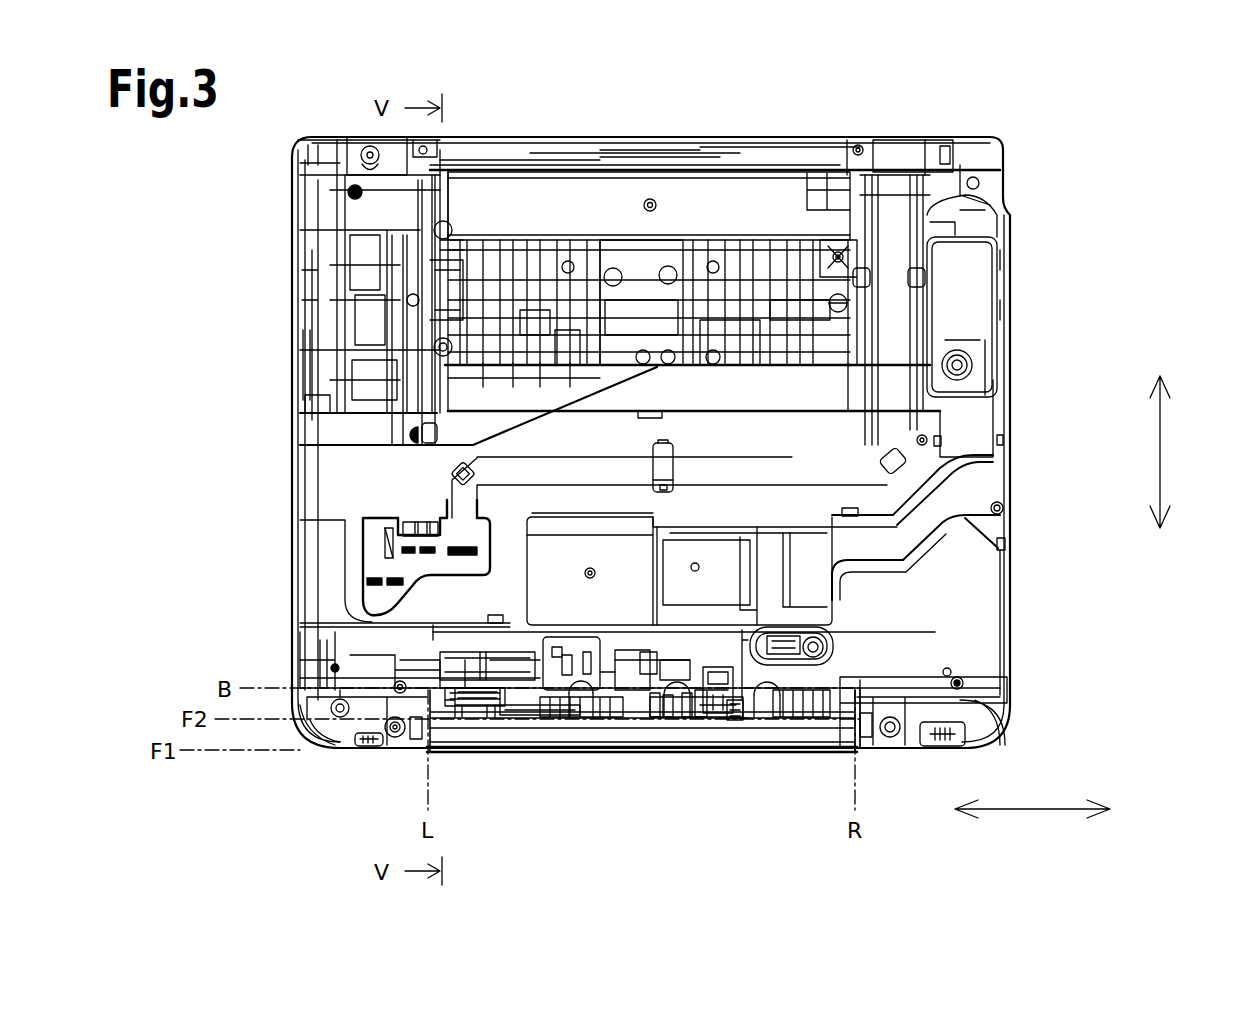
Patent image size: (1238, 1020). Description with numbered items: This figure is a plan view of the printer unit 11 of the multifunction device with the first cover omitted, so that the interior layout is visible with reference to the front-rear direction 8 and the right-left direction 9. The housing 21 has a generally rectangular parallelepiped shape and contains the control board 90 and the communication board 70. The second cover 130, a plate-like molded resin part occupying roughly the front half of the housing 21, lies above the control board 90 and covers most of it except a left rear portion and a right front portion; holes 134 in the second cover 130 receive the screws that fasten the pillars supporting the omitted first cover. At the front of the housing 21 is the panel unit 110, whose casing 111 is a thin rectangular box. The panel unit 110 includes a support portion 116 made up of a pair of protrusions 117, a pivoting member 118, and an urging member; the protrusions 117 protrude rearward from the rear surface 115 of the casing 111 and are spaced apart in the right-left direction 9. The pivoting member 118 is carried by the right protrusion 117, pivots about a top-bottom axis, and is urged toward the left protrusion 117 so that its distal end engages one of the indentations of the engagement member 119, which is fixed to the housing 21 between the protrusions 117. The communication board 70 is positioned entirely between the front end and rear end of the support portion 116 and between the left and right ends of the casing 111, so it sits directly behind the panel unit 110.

The image forming apparatus body 11 is at (1036, 138).
The housing 21 is at (1010, 378).
The front-rear direction 8 is at (1163, 452).
The right-left direction 9 is at (1030, 806).
The control board 90 is at (568, 655).
The second cover 130 is at (547, 593).
The holes 134 is at (463, 660).
The engagement member 119 is at (717, 673).
The pivoting member 118 is at (740, 703).
The communication board 70 is at (468, 708).
The casing 111 is at (527, 735).
The rear surface 115 is at (565, 693).
The panel unit 110 is at (642, 776).
The protrusions 117 is at (730, 723).
The support portion 116 is at (742, 730).